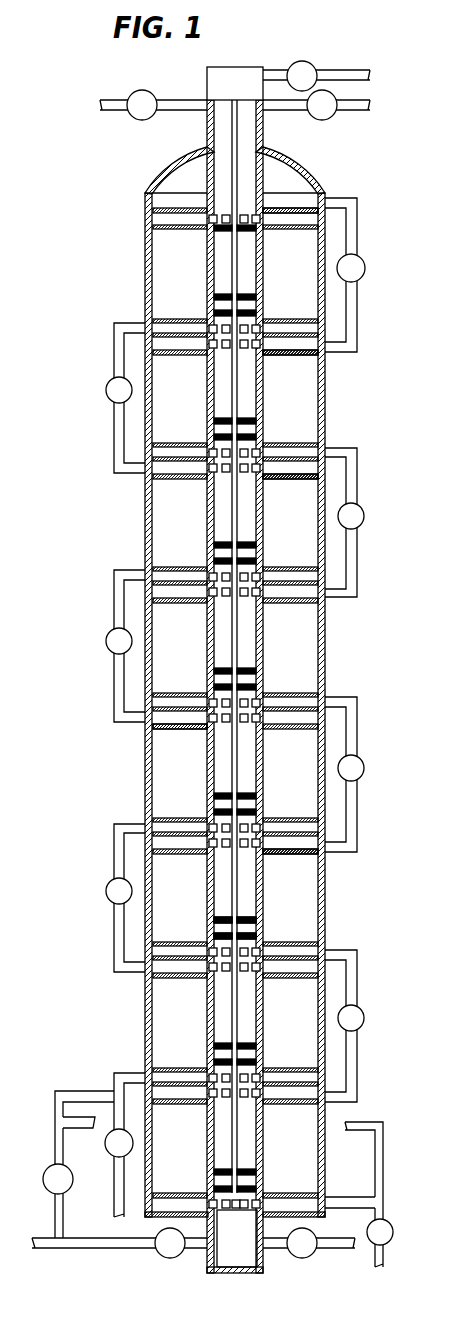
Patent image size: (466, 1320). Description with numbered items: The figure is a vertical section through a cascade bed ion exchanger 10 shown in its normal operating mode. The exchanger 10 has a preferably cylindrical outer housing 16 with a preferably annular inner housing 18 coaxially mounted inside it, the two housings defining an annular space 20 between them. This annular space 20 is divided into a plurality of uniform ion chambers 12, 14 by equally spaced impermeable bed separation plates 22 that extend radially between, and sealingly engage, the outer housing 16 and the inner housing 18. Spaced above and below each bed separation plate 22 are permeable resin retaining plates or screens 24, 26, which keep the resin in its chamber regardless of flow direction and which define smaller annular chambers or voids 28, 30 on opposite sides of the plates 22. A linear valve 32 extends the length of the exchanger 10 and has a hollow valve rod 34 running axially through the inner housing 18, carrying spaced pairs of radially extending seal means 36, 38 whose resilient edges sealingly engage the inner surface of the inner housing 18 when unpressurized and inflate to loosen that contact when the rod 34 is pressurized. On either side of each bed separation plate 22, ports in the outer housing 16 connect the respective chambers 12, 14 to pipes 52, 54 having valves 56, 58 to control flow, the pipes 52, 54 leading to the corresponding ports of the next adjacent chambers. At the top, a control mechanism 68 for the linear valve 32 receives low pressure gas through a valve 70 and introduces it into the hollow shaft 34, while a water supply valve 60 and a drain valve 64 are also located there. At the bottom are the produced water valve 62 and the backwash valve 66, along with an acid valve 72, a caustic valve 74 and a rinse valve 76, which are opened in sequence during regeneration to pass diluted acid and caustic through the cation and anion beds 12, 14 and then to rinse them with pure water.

The exchanger 10 is at (108, 219).
The ion chamber 12 is at (304, 288).
The ion chamber 14 is at (304, 413).
The outer housing 16 is at (326, 393).
The inner housing 18 is at (207, 537).
The annular space 20 is at (303, 540).
The bed separation plate 22 is at (300, 588).
The resin retaining plate 24 is at (283, 692).
The resin retaining plate 26 is at (180, 730).
The annular chamber 28 is at (182, 829).
The annular chamber 30 is at (292, 847).
The linear valve 32 is at (224, 280).
The hollow valve rod 34 is at (230, 133).
The seal means 36 is at (263, 919).
The seal means 38 is at (262, 936).
The pipe 52 is at (113, 698).
The pipe 54 is at (358, 563).
The valve 56 is at (105, 637).
The valve 58 is at (366, 511).
The water supply valve 60 is at (323, 121).
The produced water valve 62 is at (300, 1258).
The drain valve 64 is at (141, 90).
The backwash valve 66 is at (172, 1258).
The control mechanism 68 is at (248, 96).
The valve 70 is at (305, 62).
The acid valve 72 is at (107, 1145).
The caustic valve 74 is at (393, 1230).
The rinse valve 76 is at (43, 1177).